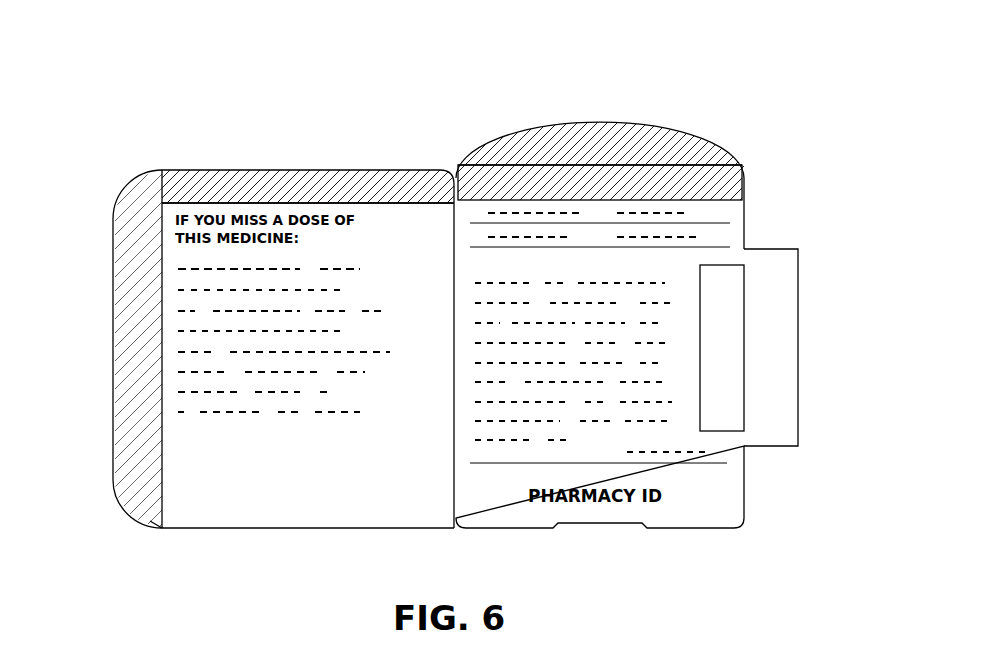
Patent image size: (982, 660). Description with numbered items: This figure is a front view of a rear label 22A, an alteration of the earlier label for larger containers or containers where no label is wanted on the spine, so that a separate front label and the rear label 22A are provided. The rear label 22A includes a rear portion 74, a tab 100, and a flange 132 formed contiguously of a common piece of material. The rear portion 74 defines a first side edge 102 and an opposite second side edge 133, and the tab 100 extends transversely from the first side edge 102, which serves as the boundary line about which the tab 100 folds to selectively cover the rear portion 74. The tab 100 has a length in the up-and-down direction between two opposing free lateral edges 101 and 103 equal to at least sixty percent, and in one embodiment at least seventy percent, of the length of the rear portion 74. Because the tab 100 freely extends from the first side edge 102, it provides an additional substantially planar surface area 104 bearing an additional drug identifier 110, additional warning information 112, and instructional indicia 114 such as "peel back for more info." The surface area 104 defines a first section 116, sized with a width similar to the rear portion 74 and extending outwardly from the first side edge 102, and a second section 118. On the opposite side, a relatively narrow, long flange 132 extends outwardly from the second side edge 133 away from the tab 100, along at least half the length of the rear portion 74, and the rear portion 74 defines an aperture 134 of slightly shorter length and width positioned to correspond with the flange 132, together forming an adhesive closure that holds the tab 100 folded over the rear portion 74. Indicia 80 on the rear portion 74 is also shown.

The rear label 22A is at (310, 112).
The tab 100 is at (126, 188).
The additional drug identifier 110 is at (240, 170).
The free lateral edge 101 is at (360, 169).
The additional warning information 112 is at (177, 233).
The instructional indicia 114 is at (131, 510).
The second section 118 is at (151, 518).
The substantially planar surface area 104 is at (227, 517).
The first section 116 is at (288, 515).
The free lateral edge 103 is at (346, 530).
The first side edge 102 is at (454, 487).
The rear portion 74 is at (693, 180).
The side effects section 80 is at (580, 265).
The aperture 134 is at (722, 267).
The flange 132 is at (788, 369).
The second side edge 133 is at (745, 476).